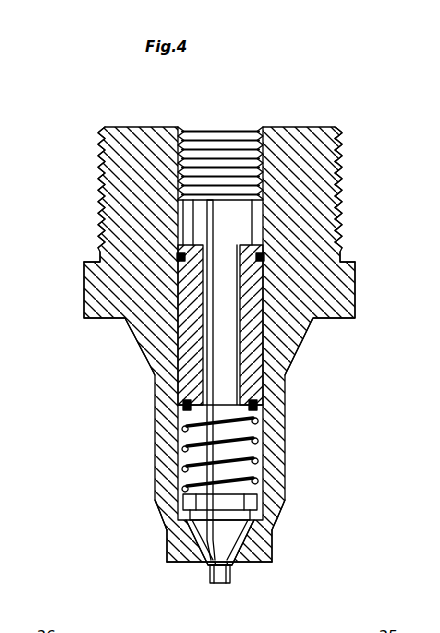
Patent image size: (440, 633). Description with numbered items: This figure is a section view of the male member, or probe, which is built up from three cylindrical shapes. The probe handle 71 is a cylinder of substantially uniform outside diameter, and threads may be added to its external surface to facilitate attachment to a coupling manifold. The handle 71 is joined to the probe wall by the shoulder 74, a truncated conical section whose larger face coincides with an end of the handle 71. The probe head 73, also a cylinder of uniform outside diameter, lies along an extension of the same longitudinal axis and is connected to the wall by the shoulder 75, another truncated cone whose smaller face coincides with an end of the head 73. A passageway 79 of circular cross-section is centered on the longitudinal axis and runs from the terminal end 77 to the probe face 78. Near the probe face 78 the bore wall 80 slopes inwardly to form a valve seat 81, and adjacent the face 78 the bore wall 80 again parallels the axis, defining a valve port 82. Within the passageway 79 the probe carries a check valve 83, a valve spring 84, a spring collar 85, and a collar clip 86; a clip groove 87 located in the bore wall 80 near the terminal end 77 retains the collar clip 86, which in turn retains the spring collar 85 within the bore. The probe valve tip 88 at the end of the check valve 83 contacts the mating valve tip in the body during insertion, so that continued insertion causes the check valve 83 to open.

The probe handle 71 is at (98, 205).
The probe head 73 is at (167, 543).
The shoulder 74 is at (143, 353).
The shoulder 75 is at (160, 503).
The terminal end 77 is at (128, 127).
The probe face 78 is at (180, 565).
The passageway 79 is at (256, 450).
The bore wall 80 is at (178, 443).
The valve seat 81 is at (272, 552).
The valve port 82 is at (237, 570).
The check valve 83 is at (217, 550).
The valve spring 84 is at (262, 490).
The spring collar 85 is at (264, 384).
The collar clip 86 is at (262, 258).
The clip groove 87 is at (262, 282).
The probe valve tip 88 is at (248, 132).